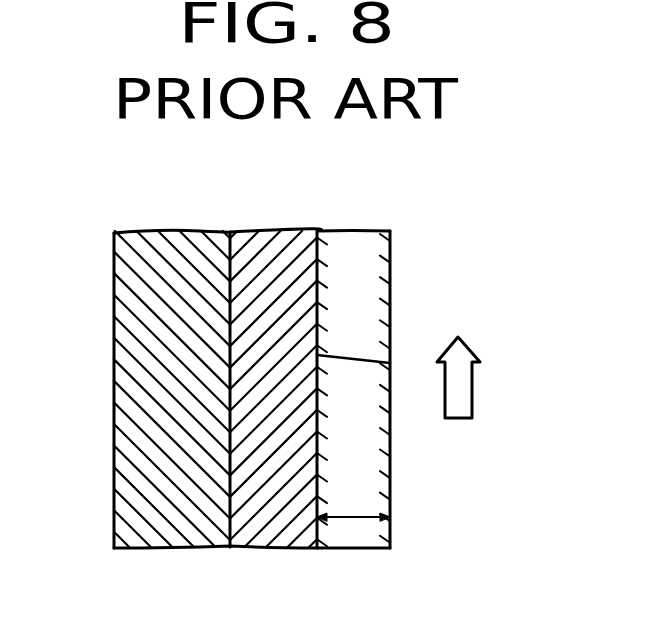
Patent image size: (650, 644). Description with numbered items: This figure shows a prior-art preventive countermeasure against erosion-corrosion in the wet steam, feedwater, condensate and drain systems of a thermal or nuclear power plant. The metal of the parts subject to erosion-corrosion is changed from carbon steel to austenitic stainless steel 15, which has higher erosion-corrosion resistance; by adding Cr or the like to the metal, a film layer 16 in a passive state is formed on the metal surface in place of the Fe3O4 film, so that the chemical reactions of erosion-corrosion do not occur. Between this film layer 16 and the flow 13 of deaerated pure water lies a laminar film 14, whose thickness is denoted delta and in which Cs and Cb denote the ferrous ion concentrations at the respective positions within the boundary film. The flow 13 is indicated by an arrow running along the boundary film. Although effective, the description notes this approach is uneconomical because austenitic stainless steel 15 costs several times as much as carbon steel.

The flow of deaerated pure water 13 is at (472, 386).
The laminar film 14 is at (358, 242).
The austenitic stainless steel 15 is at (125, 452).
The film layer 16 is at (268, 522).